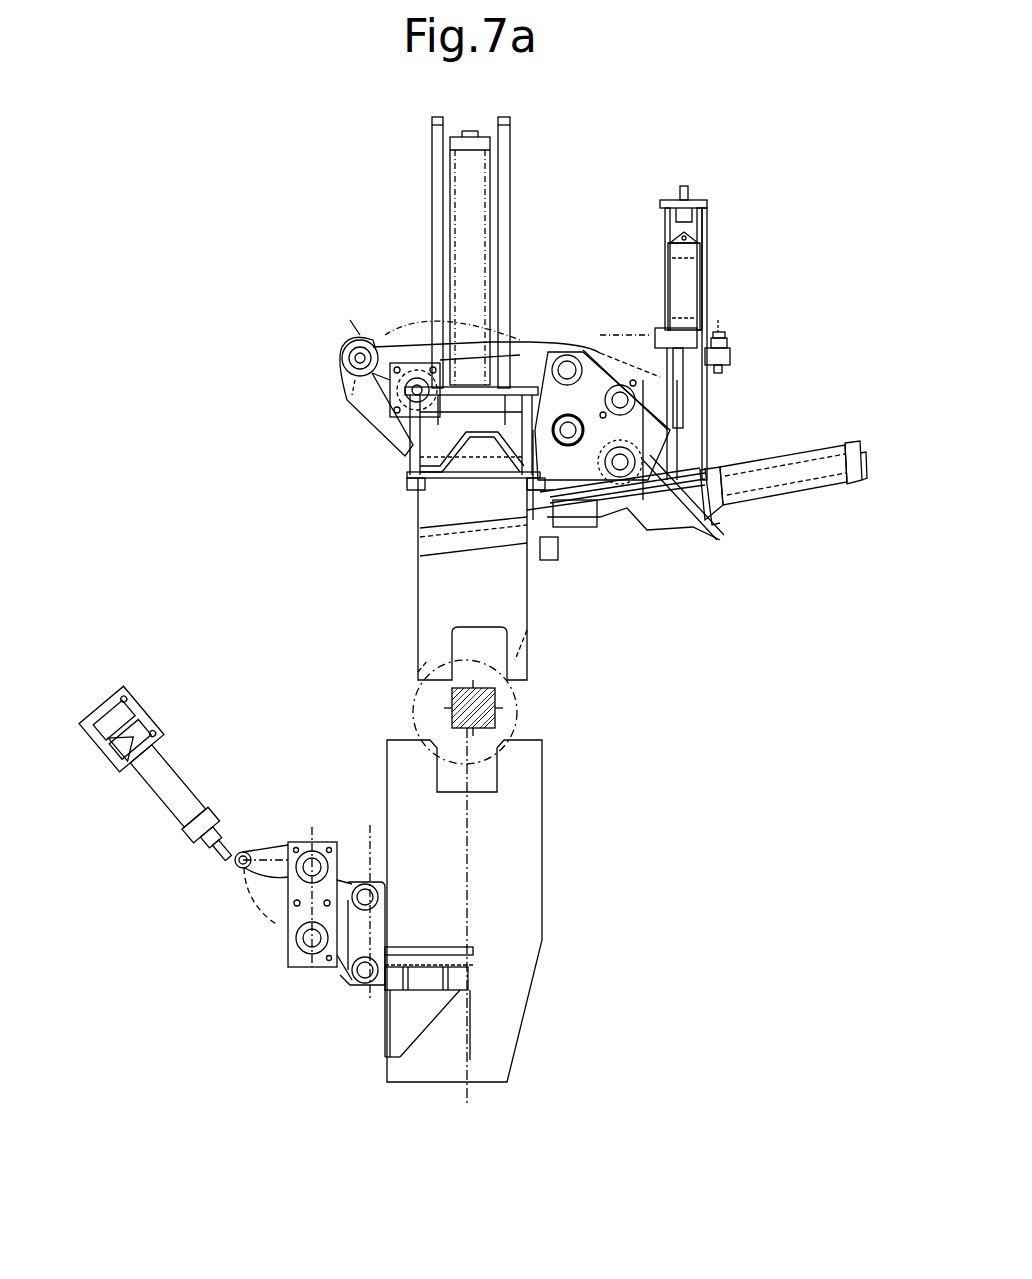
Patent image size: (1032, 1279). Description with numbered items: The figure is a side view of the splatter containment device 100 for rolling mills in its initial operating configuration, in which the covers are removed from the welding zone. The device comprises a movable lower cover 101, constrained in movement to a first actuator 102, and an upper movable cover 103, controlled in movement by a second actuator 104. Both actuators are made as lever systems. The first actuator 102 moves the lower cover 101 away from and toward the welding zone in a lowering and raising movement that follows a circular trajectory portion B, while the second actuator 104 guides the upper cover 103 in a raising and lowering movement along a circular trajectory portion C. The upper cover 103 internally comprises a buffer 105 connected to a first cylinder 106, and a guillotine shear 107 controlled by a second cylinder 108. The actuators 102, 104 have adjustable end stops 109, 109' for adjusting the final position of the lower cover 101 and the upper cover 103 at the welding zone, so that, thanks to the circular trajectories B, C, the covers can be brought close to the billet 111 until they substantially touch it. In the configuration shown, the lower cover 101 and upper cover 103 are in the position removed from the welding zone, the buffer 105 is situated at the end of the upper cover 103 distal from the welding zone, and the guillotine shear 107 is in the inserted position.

The splatter containment device 100 is at (292, 262).
The lower cover 101 is at (512, 915).
The first actuator 102 is at (280, 883).
The upper cover 103 is at (440, 590).
The second actuator 104 is at (398, 362).
The buffer 105 is at (440, 450).
The first cylinder 106 is at (477, 217).
The guillotine shear 107 is at (453, 535).
The second cylinder 108 is at (779, 480).
The adjustable end stop 109 is at (740, 330).
The adjustable end stop 109' is at (164, 781).
The billet 111 is at (495, 698).
The circular trajectory portion B is at (497, 737).
The circular trajectory portion C is at (412, 710).